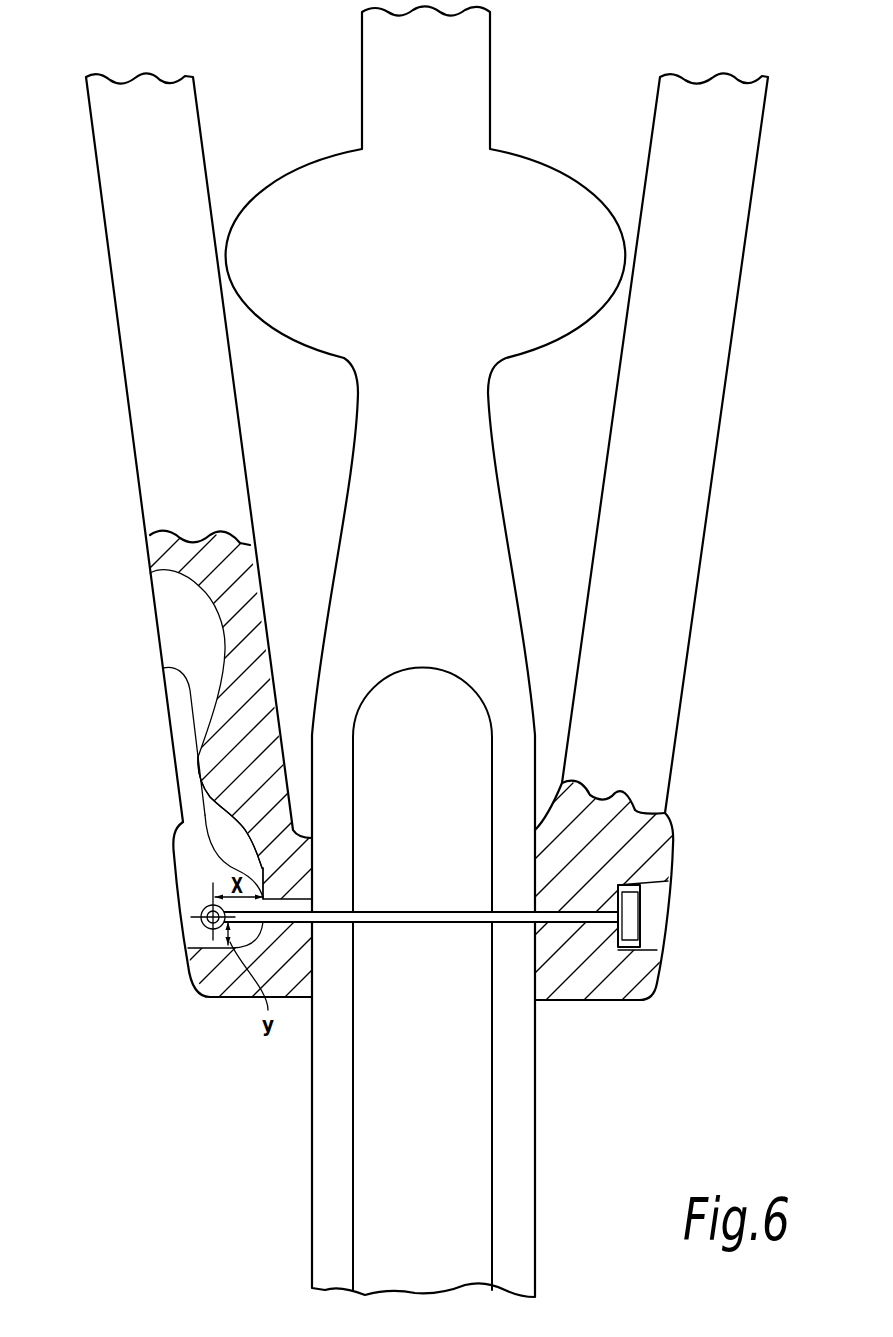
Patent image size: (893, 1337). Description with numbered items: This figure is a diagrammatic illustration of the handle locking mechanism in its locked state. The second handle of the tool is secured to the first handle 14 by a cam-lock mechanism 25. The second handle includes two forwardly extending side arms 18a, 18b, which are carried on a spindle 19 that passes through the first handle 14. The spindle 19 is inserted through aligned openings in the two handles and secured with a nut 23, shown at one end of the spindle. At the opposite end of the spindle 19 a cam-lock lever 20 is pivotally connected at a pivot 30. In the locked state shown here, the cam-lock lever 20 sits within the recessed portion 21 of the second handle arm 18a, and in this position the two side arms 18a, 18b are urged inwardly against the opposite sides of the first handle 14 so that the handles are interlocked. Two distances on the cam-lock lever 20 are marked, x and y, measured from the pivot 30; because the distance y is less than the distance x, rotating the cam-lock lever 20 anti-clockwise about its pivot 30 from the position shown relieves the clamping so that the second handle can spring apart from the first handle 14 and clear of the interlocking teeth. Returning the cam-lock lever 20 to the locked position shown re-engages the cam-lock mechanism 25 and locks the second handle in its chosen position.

The first handle 14 is at (377, 498).
The second handle arm 18a is at (148, 387).
The second handle arm 18b is at (697, 387).
The spindle 19 is at (430, 912).
The cam-lock lever 20 is at (182, 727).
The recessed portion 21 is at (223, 840).
The nut 23 is at (630, 917).
The cam-lock mechanism 25 is at (120, 885).
The pivot 30 is at (190, 937).